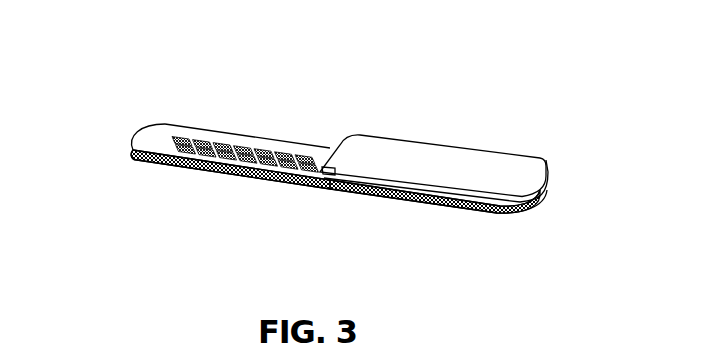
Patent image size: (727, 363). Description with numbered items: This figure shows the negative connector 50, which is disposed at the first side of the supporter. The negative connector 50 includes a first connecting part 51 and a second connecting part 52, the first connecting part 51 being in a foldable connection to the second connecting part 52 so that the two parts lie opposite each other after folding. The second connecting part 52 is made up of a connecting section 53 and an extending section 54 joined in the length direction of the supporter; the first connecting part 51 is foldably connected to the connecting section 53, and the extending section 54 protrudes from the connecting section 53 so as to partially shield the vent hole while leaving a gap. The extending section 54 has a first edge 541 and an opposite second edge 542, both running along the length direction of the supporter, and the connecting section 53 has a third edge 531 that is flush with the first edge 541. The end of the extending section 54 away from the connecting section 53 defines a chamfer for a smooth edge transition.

The negative connector 50 is at (513, 165).
The first connecting part 51 is at (388, 152).
The second connecting part 52 is at (180, 130).
The connecting section 53 is at (448, 210).
The third edge 531 is at (375, 193).
The extending section 54 is at (192, 167).
The first edge 541 is at (238, 177).
The second edge 542 is at (253, 131).